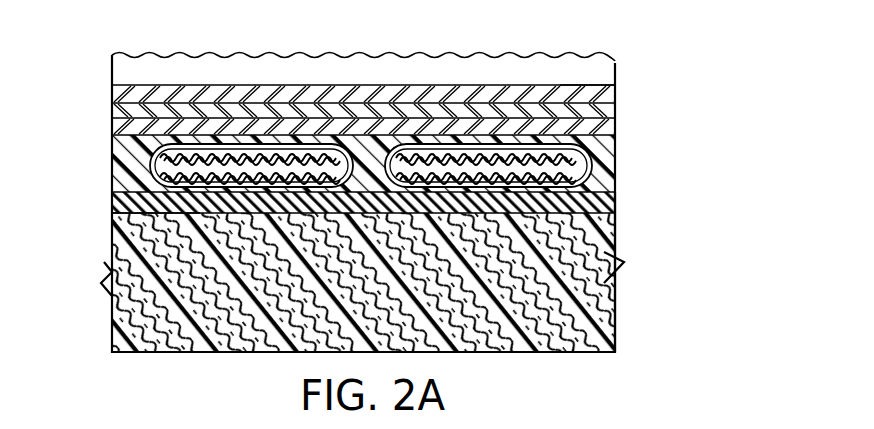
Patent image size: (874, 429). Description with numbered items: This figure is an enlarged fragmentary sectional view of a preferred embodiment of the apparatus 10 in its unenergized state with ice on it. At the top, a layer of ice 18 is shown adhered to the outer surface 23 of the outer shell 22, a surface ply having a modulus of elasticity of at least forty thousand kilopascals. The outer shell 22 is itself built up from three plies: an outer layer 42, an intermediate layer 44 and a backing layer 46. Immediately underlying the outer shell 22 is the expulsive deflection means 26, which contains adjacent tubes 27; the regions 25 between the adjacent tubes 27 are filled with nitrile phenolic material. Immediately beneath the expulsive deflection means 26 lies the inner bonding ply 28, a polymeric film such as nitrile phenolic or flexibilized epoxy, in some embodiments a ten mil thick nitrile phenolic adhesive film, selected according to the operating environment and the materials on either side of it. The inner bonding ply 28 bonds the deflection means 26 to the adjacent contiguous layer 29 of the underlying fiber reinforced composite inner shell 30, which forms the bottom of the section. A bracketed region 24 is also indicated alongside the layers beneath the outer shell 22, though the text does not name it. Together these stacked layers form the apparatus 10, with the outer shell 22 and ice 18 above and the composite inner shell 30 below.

The apparatus 10 is at (676, 211).
The layer of ice 18 is at (462, 72).
The outer shell 22 is at (110, 85).
The outer surface 23 is at (572, 90).
The backing layer assembly 24 is at (620, 138).
The regions 25 is at (598, 185).
The expulsive deflection means 26 is at (110, 132).
The tubes 27 is at (338, 147).
The inner bonding ply 28 is at (120, 200).
The contiguous layer 29 is at (118, 220).
The fiber reinforced composite inner shell 30 is at (110, 305).
The outer layer 42 is at (615, 95).
The intermediate layer 44 is at (615, 110).
The backing layer 46 is at (615, 127).